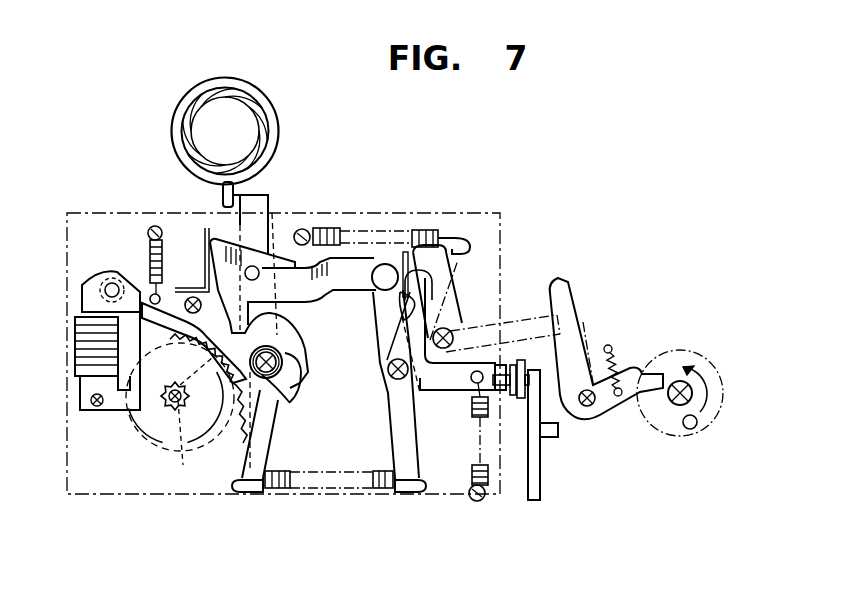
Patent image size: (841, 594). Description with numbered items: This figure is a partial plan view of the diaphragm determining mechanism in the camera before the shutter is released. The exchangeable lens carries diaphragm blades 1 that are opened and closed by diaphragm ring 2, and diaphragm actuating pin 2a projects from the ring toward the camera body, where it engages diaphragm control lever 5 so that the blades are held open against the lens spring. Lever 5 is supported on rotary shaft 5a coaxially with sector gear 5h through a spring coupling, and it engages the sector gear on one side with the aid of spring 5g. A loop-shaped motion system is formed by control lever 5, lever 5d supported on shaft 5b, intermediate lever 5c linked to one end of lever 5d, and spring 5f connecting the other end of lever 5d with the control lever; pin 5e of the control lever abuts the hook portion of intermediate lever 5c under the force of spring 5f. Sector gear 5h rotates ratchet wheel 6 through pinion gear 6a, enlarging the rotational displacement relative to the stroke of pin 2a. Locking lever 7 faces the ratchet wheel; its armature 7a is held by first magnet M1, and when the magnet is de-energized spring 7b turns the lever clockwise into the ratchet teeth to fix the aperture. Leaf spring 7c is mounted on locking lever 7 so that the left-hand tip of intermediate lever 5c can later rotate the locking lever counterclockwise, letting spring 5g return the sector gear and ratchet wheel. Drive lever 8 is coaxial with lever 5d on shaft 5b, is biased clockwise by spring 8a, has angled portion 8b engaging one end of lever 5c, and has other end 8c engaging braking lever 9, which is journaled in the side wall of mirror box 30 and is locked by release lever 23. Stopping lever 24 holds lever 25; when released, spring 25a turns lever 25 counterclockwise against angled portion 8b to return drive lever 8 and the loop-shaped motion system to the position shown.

The diaphragm blades 1 is at (258, 108).
The diaphragm ring 2 is at (178, 138).
The diaphragm actuating pin 2a is at (222, 196).
The diaphragm control lever 5 is at (270, 205).
The rotary shaft 5a is at (305, 370).
The shaft 5b is at (390, 383).
The intermediate lever 5c is at (344, 290).
The lever 5d is at (402, 442).
The pin 5e is at (259, 270).
The spring 5f is at (343, 486).
The spring 5g is at (293, 395).
The sector gear 5h is at (304, 354).
The ratchet wheel 6 is at (135, 425).
The pinion gear 6a is at (180, 435).
The locking lever 7 is at (194, 340).
The armature 7a is at (100, 283).
The spring 7b is at (150, 263).
The leaf spring 7c is at (203, 234).
The first magnet M1 is at (78, 344).
The drive lever 8 is at (453, 388).
The spring 8a is at (478, 438).
The angled portion 8b is at (400, 213).
The other end 8c is at (508, 398).
The braking lever 9 is at (518, 367).
The release lever 23 is at (538, 460).
The stopping lever 24 is at (572, 322).
The lever 25 is at (517, 318).
The spring 25a is at (370, 236).
The mirror box 30 is at (478, 213).